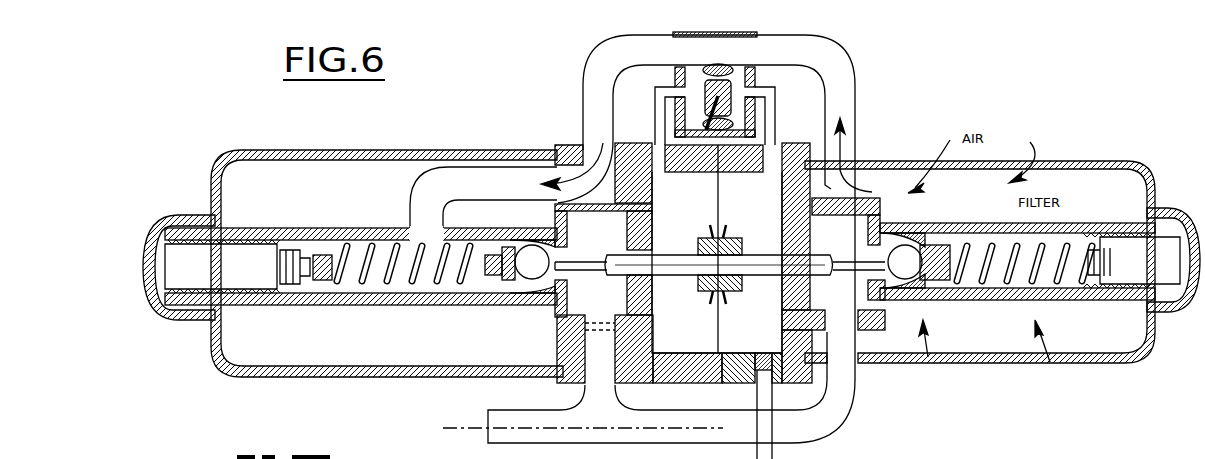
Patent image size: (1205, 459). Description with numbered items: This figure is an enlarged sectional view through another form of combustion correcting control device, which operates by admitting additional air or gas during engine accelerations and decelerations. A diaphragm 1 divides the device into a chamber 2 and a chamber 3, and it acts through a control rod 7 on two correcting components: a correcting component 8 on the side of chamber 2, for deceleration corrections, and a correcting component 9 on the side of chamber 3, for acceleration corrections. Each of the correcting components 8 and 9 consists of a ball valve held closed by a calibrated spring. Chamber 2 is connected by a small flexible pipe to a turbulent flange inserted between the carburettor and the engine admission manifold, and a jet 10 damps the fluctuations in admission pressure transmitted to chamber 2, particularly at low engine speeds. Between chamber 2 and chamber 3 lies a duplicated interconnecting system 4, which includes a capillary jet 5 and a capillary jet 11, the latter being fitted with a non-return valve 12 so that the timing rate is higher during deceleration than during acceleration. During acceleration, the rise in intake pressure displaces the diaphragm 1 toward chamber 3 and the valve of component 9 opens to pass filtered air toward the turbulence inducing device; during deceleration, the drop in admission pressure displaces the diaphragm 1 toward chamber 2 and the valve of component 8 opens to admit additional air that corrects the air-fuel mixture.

The diaphragm 1 is at (720, 205).
The chamber 2 is at (760, 332).
The chamber 3 is at (553, 326).
The interconnecting system 4 is at (676, 76).
The capillary jet 5 is at (748, 74).
The control rod 7 is at (750, 262).
The correcting component 8 is at (988, 300).
The correcting component 9 is at (387, 297).
The jet 10 is at (761, 352).
The capillary jet 11 is at (732, 120).
The non-return valve 12 is at (700, 110).